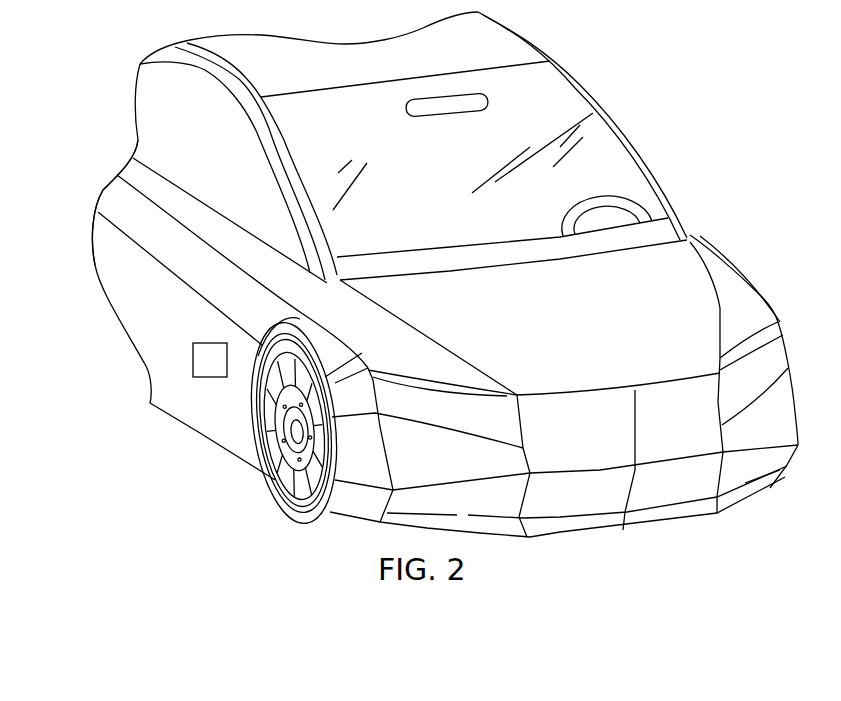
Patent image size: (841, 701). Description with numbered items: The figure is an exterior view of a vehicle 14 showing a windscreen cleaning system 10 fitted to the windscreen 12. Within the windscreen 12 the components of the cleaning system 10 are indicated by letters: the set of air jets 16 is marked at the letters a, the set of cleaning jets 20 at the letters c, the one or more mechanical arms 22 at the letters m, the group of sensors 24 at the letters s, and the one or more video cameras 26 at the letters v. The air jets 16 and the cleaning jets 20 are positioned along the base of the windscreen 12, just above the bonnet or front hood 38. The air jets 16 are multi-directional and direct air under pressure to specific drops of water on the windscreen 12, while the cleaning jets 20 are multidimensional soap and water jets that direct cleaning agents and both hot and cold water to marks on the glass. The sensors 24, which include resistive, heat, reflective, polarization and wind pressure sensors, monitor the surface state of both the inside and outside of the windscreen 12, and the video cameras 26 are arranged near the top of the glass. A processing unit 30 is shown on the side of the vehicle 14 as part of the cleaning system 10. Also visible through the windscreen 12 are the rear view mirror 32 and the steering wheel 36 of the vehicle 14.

The windscreen cleaning system 10 is at (646, 65).
The windscreen 12 is at (512, 91).
The vehicle 14 is at (242, 201).
The set of air jets 16 is at (565, 255).
The set of cleaning jets 20 is at (410, 265).
The mechanical arms 22 is at (544, 228).
The sensors 24 is at (296, 104).
The video cameras 26 is at (490, 102).
The processing unit 30 is at (205, 343).
The rear view mirror 32 is at (427, 120).
The steering wheel 36 is at (614, 205).
The bonnet or front hood 38 is at (638, 353).